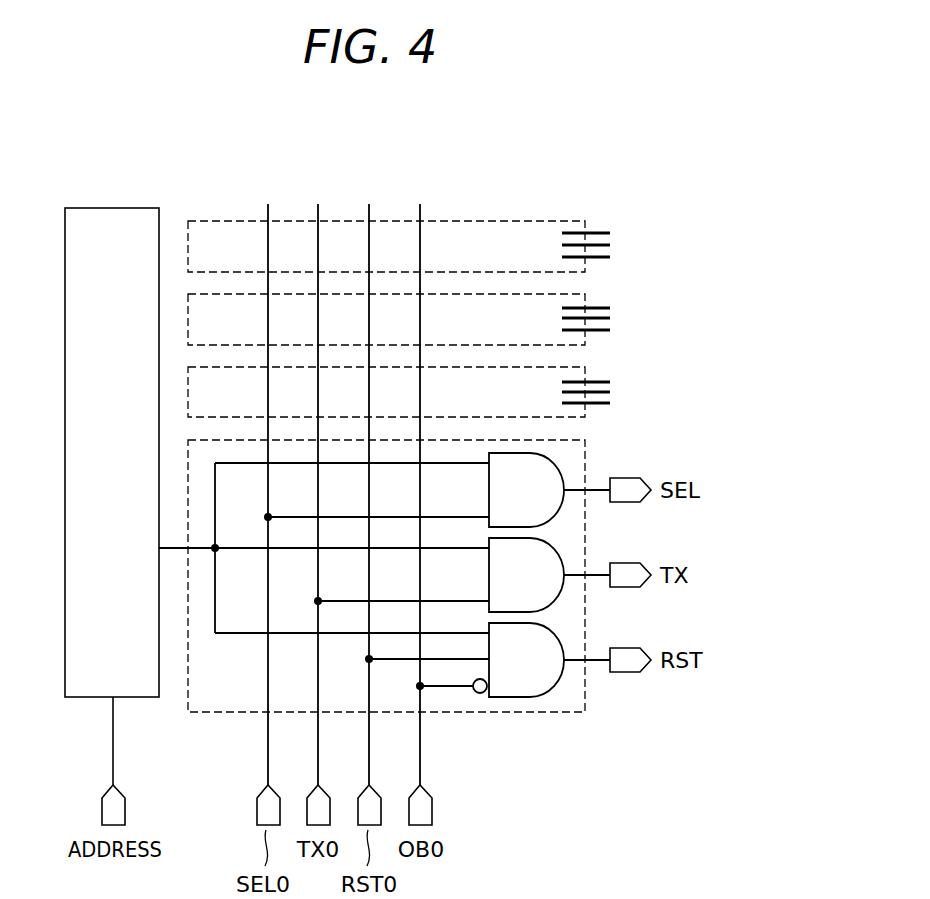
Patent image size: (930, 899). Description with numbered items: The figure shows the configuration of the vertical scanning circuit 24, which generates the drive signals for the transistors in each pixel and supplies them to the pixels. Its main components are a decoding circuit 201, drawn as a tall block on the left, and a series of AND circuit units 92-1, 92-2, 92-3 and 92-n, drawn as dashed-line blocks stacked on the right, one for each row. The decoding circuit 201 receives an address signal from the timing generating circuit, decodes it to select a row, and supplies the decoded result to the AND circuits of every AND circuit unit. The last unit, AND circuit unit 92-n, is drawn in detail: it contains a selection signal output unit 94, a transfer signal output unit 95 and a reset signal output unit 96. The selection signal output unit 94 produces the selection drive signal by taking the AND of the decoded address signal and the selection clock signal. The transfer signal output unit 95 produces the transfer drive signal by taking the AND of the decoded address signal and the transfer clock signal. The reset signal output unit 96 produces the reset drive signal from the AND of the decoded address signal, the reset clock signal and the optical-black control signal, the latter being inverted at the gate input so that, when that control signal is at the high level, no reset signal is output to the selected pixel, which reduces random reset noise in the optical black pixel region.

The vertical scanning circuit 24 is at (439, 425).
The decoding circuit 201 is at (118, 208).
The AND circuit unit 92-1 is at (553, 222).
The AND circuit unit 92-2 is at (553, 295).
The AND circuit unit 92-3 is at (553, 368).
The AND circuit unit 92-n is at (553, 441).
The selection signal output unit 94 is at (551, 520).
The transfer signal output unit 95 is at (551, 605).
The reset signal output unit 96 is at (551, 690).